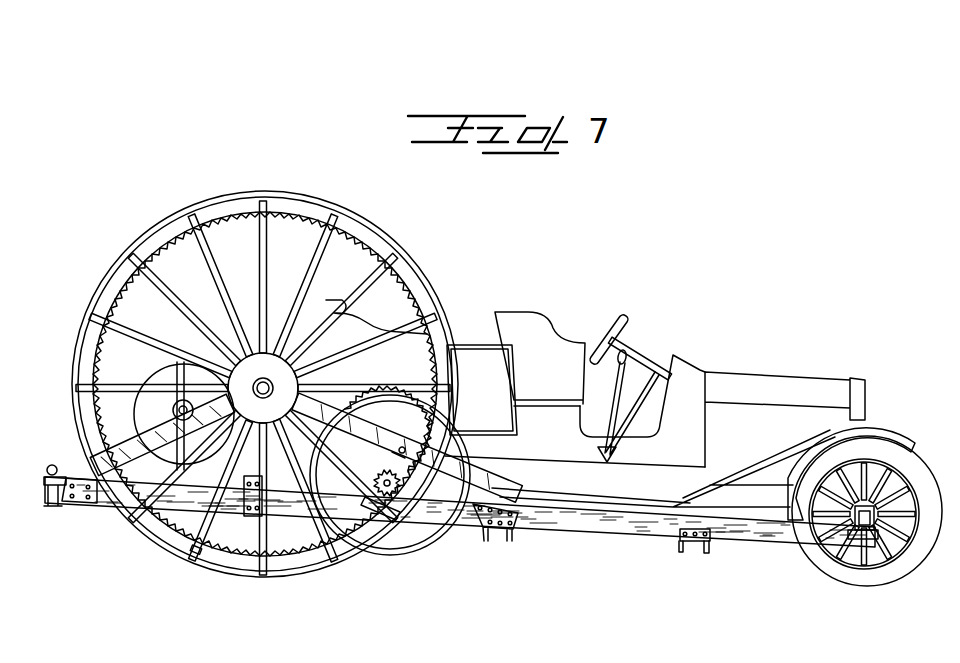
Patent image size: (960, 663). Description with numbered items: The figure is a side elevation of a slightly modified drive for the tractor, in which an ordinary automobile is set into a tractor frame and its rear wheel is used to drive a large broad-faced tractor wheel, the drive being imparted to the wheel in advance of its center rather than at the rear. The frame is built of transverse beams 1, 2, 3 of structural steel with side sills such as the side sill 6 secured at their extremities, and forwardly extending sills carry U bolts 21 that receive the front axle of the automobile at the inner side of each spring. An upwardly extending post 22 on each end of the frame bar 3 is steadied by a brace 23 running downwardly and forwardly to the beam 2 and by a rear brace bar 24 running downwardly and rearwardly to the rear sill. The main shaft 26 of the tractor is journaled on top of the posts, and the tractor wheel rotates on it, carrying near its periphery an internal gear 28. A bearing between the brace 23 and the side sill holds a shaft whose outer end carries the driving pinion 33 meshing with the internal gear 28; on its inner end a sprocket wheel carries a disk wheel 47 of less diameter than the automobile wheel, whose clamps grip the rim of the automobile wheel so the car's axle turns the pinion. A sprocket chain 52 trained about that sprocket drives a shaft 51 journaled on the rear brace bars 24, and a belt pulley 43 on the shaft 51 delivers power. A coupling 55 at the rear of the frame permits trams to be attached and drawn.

The transverse beam 1 is at (698, 540).
The transverse beam 2 is at (501, 540).
The transverse beam 3 is at (256, 520).
The side sill 6 is at (547, 520).
The U bolt 21 is at (852, 522).
The post 22 is at (212, 572).
The brace 23 is at (455, 492).
The rear brace bar 24 is at (107, 490).
The main shaft 26 is at (283, 300).
The internal gear 28 is at (408, 290).
The driving pinion 33 is at (383, 500).
The belt pulley 43 is at (158, 374).
The disk wheel 47 is at (402, 540).
The shaft 51 is at (73, 389).
The sprocket chain 52 is at (243, 420).
The coupling 55 is at (56, 453).